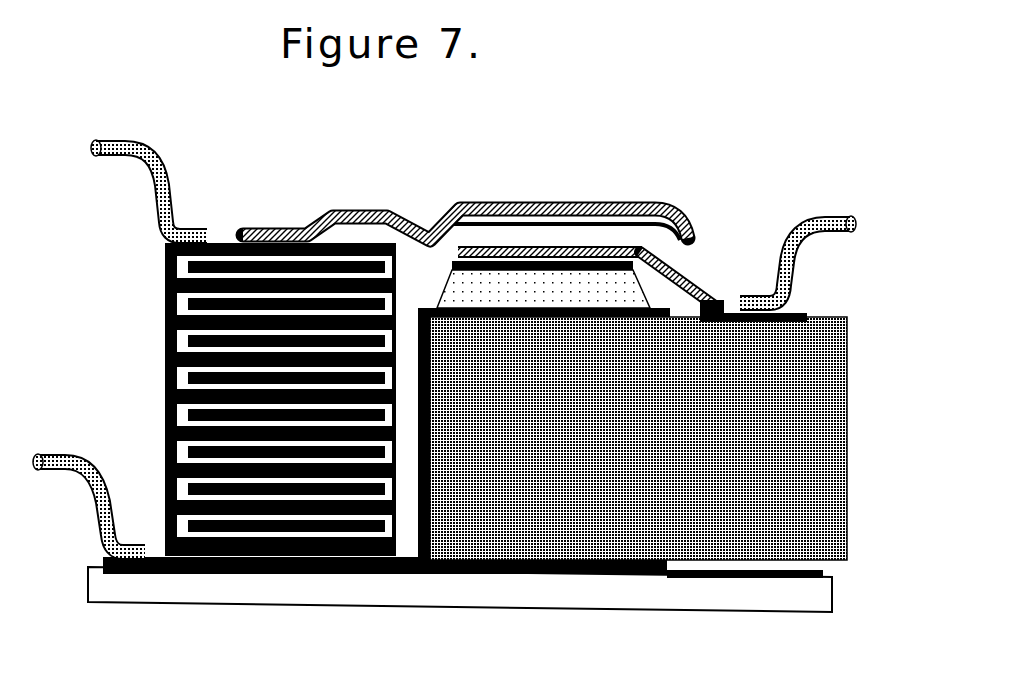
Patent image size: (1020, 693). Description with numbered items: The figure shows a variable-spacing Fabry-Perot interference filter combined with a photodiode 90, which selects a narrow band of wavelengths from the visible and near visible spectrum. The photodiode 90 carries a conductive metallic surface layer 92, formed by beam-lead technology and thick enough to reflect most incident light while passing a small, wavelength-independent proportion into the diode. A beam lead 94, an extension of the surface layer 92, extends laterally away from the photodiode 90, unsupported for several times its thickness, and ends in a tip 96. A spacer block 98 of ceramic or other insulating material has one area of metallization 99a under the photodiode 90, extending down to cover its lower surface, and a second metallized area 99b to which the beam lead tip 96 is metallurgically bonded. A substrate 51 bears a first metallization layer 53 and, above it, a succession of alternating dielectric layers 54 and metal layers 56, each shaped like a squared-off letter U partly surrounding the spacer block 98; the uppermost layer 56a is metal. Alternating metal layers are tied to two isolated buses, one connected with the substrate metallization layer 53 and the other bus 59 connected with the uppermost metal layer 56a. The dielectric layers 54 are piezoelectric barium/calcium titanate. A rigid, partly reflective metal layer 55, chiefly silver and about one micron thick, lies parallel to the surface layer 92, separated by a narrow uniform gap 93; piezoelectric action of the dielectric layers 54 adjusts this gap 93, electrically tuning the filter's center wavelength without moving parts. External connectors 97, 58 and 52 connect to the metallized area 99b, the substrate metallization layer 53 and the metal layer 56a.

The substrate 51 is at (593, 596).
The external connector 52 is at (100, 138).
The first metallization layer 53 is at (715, 577).
The dielectric layers 54 is at (205, 332).
The partly reflective metal layer 55 is at (347, 212).
The metal layers 56 is at (207, 410).
The uppermost metal layer 56a is at (220, 242).
The external connector 58 is at (95, 505).
The bus 59 is at (165, 262).
The photodiode 90 is at (487, 297).
The conductive metallic surface layer 92 is at (527, 247).
The gap 93 is at (552, 237).
The beam lead 94 is at (683, 277).
The tip 96 is at (713, 307).
The external connector 97 is at (852, 210).
The spacer block 98 is at (805, 510).
The metallization area 99a is at (648, 300).
The second metallized area 99b is at (810, 308).